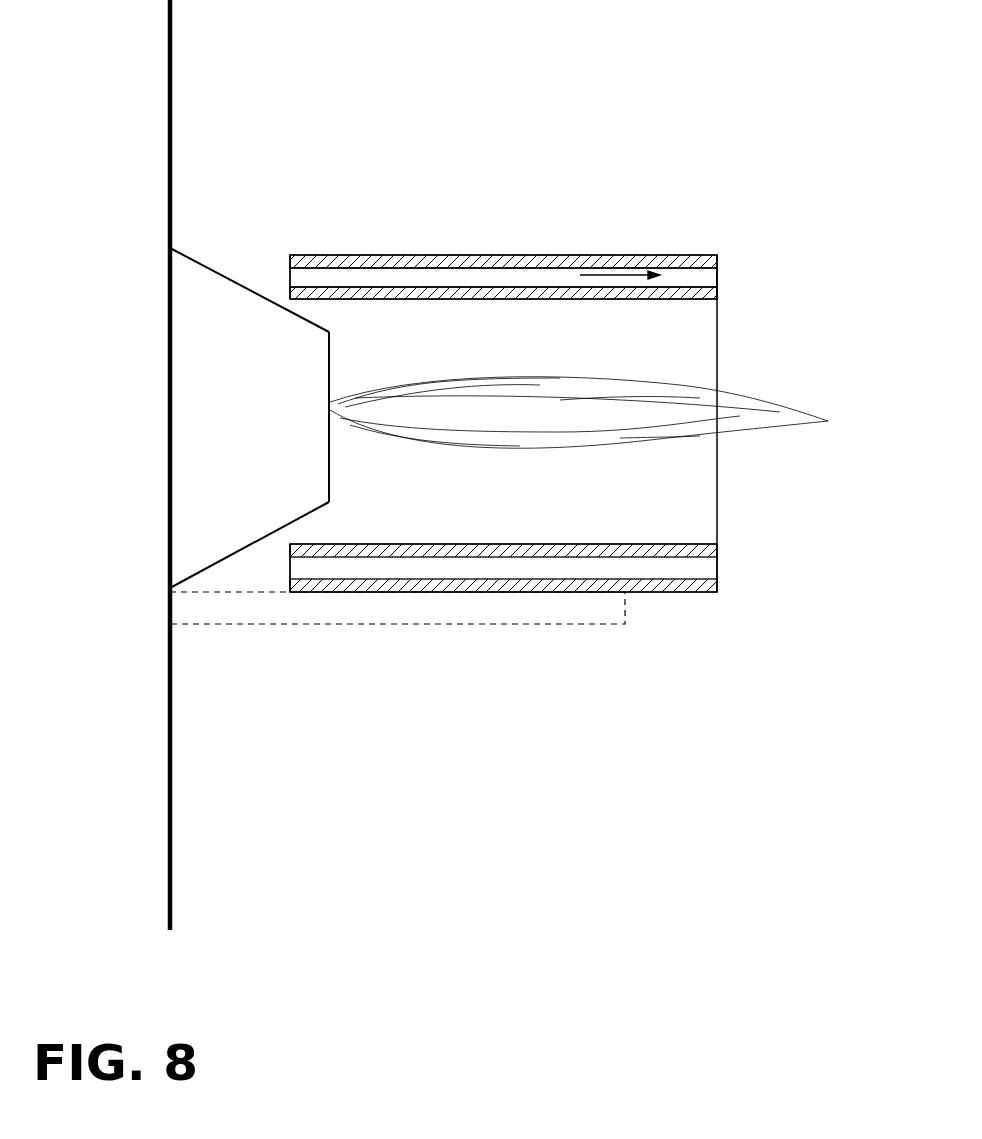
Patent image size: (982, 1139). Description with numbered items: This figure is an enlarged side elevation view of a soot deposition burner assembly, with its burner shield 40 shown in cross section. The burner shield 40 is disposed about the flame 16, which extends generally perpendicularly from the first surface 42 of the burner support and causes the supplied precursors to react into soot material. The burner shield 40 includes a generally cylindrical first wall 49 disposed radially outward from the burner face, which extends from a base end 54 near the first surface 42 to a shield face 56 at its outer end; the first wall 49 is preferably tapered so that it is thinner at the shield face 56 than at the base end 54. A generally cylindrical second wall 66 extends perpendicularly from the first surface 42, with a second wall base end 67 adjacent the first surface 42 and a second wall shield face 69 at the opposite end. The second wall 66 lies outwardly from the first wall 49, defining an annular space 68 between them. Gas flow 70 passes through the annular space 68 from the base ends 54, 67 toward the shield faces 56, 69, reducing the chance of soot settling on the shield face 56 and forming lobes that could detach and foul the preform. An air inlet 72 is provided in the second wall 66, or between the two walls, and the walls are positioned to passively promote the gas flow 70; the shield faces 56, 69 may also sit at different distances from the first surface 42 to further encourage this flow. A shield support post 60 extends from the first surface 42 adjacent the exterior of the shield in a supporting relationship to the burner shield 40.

The flame 16 is at (757, 413).
The burner shield 40 is at (433, 248).
The first surface 42 is at (173, 70).
The first wall 49 is at (719, 280).
The base end 54 is at (289, 553).
The shield face 56 is at (719, 552).
The shield support post 60 is at (374, 626).
The second wall 66 is at (569, 254).
The second wall base end 67 is at (289, 259).
The annular space 68 is at (521, 272).
The second wall shield face 69 is at (719, 262).
The gas flow 70 is at (636, 270).
The air inlet 72 is at (289, 277).